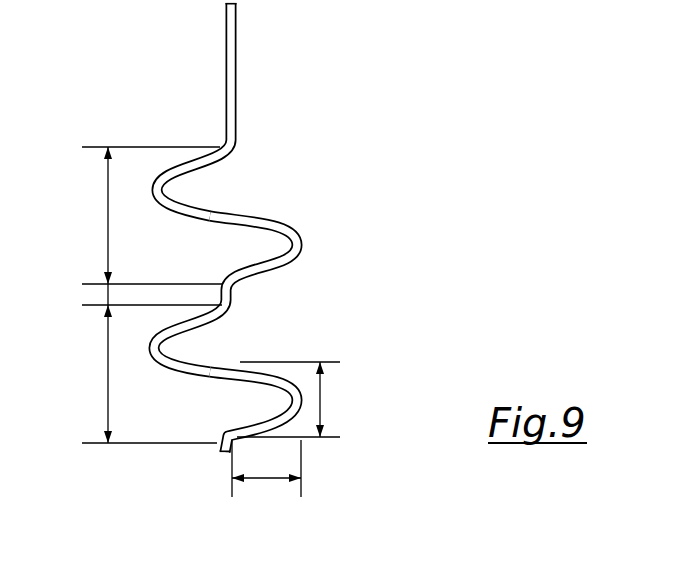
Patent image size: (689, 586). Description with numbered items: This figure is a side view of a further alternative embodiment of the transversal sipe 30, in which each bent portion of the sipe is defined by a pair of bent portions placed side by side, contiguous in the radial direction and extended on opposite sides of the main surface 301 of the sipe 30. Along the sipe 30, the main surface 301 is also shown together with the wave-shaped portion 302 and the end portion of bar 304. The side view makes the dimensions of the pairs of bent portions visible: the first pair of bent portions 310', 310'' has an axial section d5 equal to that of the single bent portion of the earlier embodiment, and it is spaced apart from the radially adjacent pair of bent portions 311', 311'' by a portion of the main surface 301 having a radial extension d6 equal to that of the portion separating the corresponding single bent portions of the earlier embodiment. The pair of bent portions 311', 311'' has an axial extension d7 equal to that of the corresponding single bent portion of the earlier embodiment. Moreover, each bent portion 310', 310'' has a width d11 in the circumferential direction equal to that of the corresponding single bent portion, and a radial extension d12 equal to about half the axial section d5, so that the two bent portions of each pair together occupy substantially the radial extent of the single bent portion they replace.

The transversal sipe 30 is at (265, 250).
The end portion of bar 304 is at (238, 41).
The main surface 301 is at (237, 108).
The wave-shaped portion 302 is at (265, 283).
The bent portion 311' is at (323, 253).
The bent portion 311'' is at (162, 141).
The bent portion 310' is at (299, 427).
The bent portion 310'' is at (174, 400).
The axial section d5 is at (105, 390).
The radial extension d6 is at (108, 296).
The axial extension d7 is at (108, 228).
The width d11 is at (266, 468).
The radial extension d12 is at (301, 399).